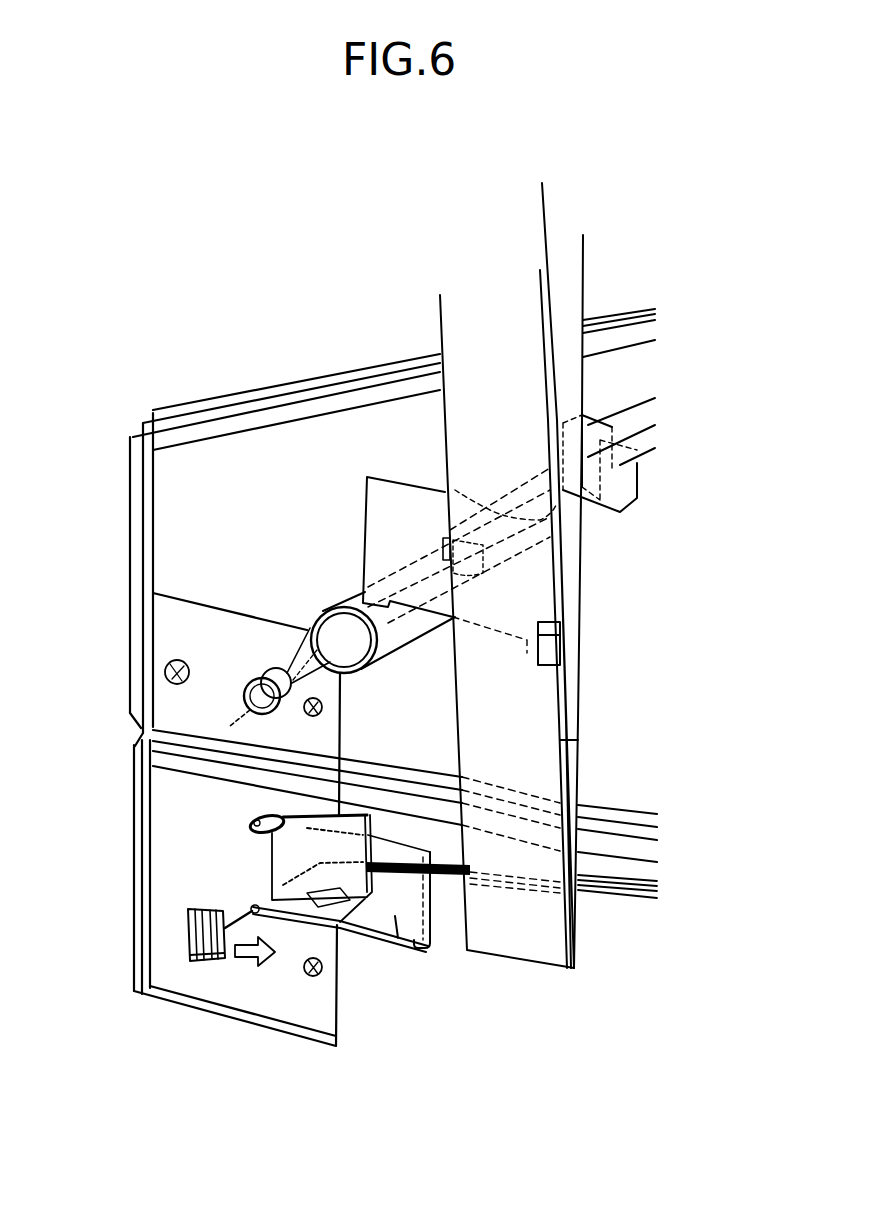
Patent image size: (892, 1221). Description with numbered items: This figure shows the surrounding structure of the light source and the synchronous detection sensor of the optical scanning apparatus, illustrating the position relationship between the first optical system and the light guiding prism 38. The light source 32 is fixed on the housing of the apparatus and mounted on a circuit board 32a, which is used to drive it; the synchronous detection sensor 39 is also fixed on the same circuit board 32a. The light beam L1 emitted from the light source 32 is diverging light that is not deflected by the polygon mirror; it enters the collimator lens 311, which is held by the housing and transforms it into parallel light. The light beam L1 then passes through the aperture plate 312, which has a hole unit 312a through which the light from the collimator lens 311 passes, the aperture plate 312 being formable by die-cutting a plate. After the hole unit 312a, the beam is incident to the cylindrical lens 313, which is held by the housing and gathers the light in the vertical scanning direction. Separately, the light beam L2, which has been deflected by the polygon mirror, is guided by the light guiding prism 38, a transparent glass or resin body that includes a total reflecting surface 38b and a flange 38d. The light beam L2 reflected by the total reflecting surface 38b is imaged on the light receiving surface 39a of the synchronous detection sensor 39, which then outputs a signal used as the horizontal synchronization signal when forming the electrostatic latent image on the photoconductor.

The light source 32 is at (285, 672).
The circuit board 32a is at (178, 837).
The collimator lens 311 is at (317, 603).
The aperture plate 312 is at (387, 528).
The hole unit 312a is at (443, 550).
The cylindrical lens 313 is at (627, 487).
The light guiding prism 38 is at (362, 940).
The total reflecting surface 38b is at (290, 846).
The flange 38d is at (400, 943).
The synchronous detection sensor 39 is at (200, 897).
The light receiving surface 39a is at (203, 948).
The light beam L1 is at (403, 637).
The light beam L2 is at (627, 893).